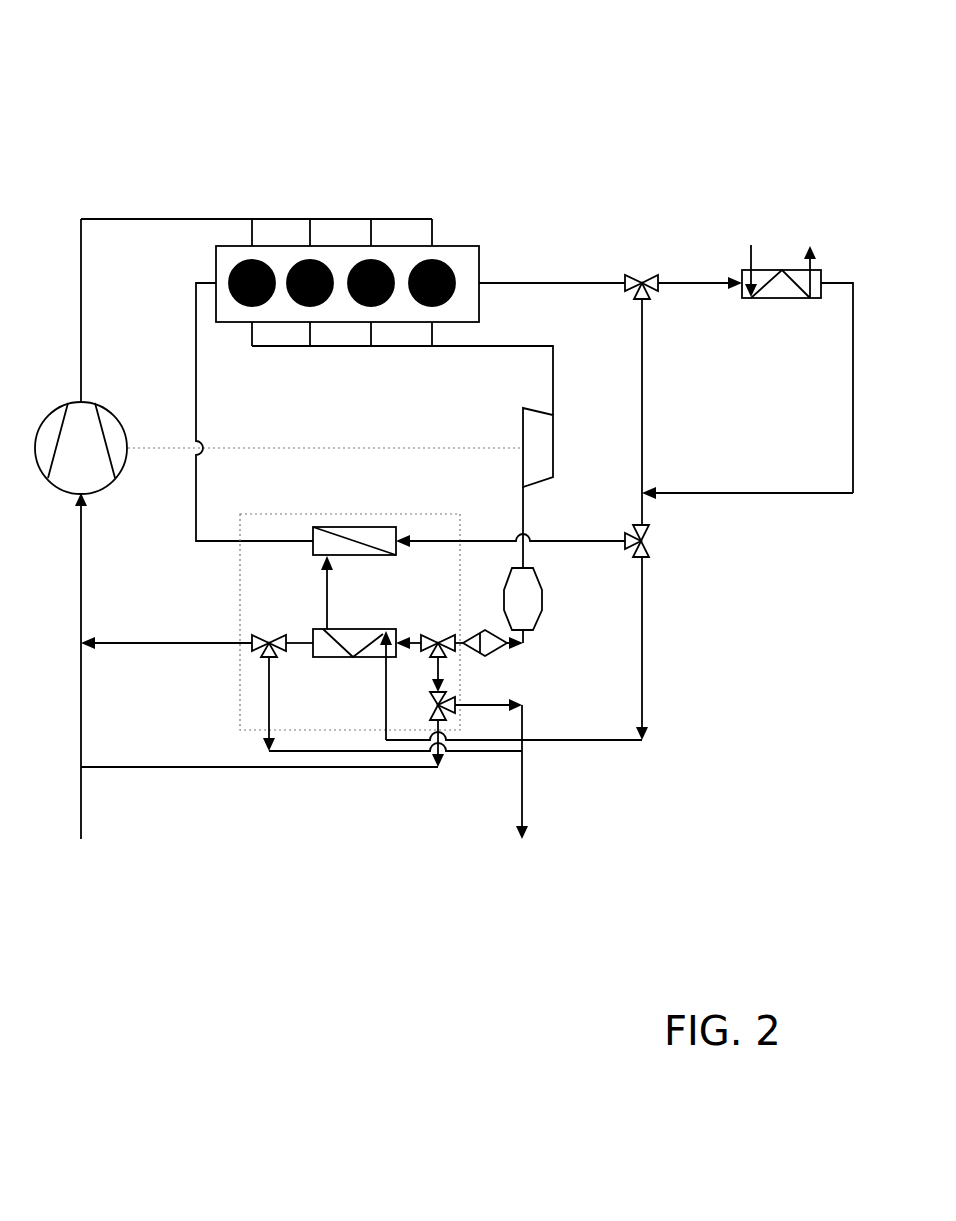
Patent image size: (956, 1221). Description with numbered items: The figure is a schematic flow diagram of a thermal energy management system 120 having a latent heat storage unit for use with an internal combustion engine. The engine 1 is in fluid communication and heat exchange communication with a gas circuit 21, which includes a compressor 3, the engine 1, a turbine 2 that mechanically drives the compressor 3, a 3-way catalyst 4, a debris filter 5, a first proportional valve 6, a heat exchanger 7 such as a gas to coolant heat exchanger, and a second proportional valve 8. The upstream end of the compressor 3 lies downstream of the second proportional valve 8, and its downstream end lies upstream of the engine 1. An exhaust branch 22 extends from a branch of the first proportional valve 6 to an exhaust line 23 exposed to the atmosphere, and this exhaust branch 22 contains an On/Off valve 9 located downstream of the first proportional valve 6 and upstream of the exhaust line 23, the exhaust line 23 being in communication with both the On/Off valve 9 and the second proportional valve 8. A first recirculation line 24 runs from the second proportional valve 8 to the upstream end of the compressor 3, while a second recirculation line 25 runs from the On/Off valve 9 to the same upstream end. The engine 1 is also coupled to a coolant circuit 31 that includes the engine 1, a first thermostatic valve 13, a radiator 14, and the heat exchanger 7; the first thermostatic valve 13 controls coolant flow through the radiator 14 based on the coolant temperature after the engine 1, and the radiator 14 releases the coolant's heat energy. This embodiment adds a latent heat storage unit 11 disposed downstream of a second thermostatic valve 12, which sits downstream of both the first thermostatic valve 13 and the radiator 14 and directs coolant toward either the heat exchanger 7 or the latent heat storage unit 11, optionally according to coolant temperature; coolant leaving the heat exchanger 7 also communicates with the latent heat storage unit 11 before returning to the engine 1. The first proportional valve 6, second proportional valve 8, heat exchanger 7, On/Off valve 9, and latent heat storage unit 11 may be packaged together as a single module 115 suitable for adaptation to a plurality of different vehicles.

The engine 1 is at (479, 258).
The turbine 2 is at (523, 441).
The compressor 3 is at (43, 421).
The 3-way catalyst 4 is at (543, 620).
The debris filter 5 is at (494, 631).
The first proportional valve 6 is at (439, 636).
The heat exchanger 7 is at (323, 660).
The second proportional valve 8 is at (269, 637).
The On/Off valve 9 is at (429, 706).
The latent heat storage unit 11 is at (397, 551).
The second thermostatic valve 12 is at (643, 543).
The first thermostatic valve 13 is at (643, 276).
The radiator 14 is at (778, 299).
The gas circuit 21 is at (236, 210).
The exhaust branch 22 is at (443, 676).
The exhaust line 23 is at (524, 815).
The first recirculation line 24 is at (176, 641).
The second recirculation line 25 is at (240, 768).
The coolant circuit 31 is at (574, 272).
The module 115 is at (357, 514).
The thermal energy management system 120 is at (482, 108).